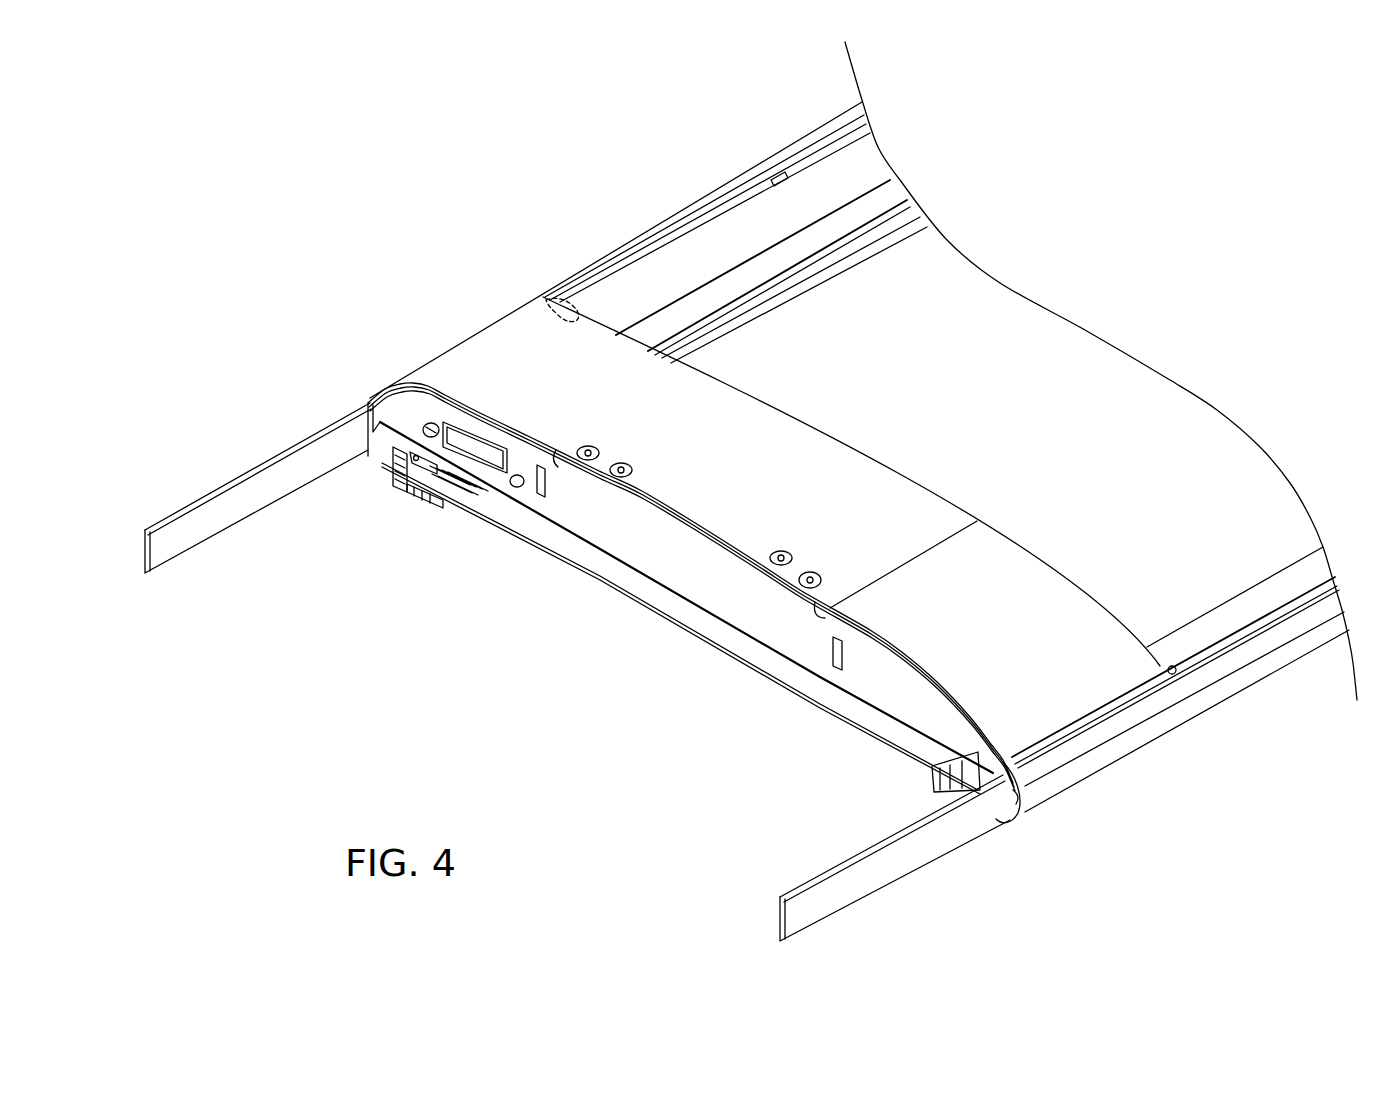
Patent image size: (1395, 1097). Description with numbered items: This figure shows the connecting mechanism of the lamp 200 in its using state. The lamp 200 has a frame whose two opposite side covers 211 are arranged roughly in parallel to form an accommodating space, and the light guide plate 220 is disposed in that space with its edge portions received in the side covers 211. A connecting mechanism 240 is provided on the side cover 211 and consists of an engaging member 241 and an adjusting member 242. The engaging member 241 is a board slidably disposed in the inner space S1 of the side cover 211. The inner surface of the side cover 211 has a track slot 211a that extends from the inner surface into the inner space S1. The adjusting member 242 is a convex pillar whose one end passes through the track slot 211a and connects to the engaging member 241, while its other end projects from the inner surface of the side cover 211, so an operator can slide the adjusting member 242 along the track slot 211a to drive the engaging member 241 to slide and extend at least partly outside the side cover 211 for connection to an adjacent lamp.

The lamp 200 is at (131, 103).
The connecting mechanism 240 is at (571, 161).
The engaging member 241 is at (218, 514).
The adjusting member 242 is at (563, 298).
The side cover 211 is at (428, 498).
The track slot 211a is at (743, 198).
The light guide plate 220 is at (607, 592).
The inner space S1 is at (390, 457).